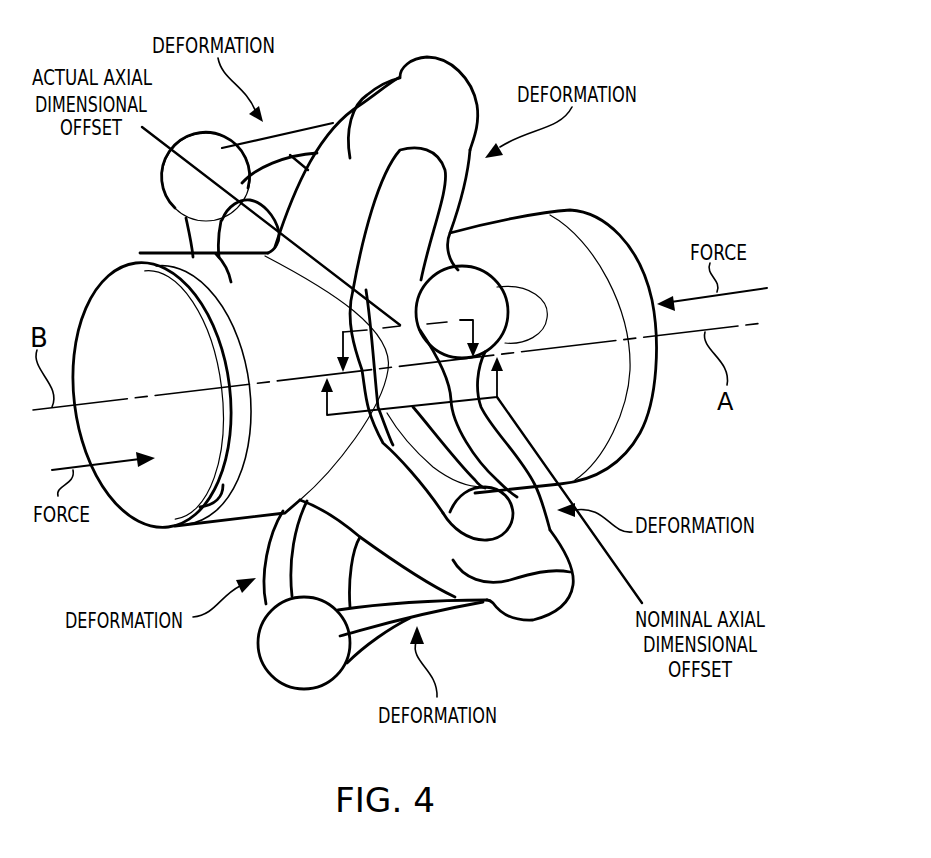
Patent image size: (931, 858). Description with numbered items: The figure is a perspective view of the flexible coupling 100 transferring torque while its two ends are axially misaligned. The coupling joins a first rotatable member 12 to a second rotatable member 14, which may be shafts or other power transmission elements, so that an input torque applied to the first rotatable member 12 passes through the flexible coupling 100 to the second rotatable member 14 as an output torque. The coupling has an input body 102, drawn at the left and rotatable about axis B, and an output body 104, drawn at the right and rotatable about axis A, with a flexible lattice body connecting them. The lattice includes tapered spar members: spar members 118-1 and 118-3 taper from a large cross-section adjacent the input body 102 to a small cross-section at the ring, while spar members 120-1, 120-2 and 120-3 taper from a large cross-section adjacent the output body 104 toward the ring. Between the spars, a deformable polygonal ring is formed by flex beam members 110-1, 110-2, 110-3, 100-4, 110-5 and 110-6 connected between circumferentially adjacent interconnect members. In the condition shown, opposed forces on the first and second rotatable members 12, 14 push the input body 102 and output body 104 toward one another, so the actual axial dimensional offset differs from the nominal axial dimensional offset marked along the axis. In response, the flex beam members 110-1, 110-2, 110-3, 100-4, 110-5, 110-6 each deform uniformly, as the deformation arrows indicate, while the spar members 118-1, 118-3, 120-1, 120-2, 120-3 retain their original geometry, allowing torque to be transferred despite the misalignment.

The first rotatable member 12 is at (130, 517).
The second rotatable member 14 is at (637, 433).
The flexible coupling 100 is at (209, 673).
The input body 102 is at (200, 253).
The output body 104 is at (587, 260).
The flex beam member 110-1 is at (460, 192).
The flex beam member 110-2 is at (511, 448).
The flex beam member 110-3 is at (430, 607).
The flex beam member 100-4 is at (283, 527).
The flex beam member 110-5 is at (190, 233).
The flex beam member 110-6 is at (297, 140).
The spar member 118-1 is at (398, 80).
The spar member 118-3 is at (563, 573).
The spar member 120-1 is at (383, 236).
The spar member 120-2 is at (352, 592).
The spar member 120-3 is at (527, 290).